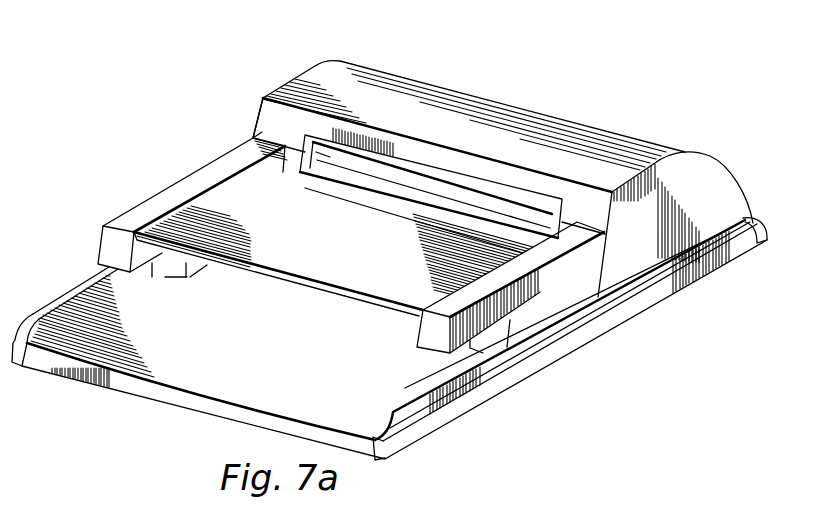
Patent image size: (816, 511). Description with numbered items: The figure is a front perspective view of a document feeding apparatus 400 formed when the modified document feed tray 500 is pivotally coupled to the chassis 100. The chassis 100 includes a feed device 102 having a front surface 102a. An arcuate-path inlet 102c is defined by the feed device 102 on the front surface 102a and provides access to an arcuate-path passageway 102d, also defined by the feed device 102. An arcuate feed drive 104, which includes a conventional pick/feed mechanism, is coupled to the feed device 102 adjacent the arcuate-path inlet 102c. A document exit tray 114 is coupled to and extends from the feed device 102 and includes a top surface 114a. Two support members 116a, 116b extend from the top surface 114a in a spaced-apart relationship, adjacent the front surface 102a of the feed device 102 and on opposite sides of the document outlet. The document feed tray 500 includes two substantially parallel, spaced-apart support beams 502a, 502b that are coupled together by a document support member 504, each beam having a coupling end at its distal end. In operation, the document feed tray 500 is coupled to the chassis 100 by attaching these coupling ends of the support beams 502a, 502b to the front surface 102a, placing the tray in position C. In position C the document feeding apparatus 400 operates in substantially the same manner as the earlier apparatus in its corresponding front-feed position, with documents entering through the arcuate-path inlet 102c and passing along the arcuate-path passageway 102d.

The chassis 100 is at (604, 113).
The feed device 102 is at (429, 93).
The front surface 102a is at (267, 118).
The arcuate-path inlet 102c is at (478, 184).
The arcuate-path passageway 102d is at (384, 174).
The arcuate feed drive 104 is at (352, 153).
The document exit tray 114 is at (182, 398).
The top surface 114a is at (339, 353).
The support member 116a is at (170, 280).
The support member 116b is at (547, 320).
The document feeding apparatus 400 is at (123, 191).
The document feed tray 500 is at (232, 148).
The support beam 502a is at (558, 274).
The support beam 502b is at (175, 192).
The document support member 504 is at (417, 271).
The position C is at (507, 408).